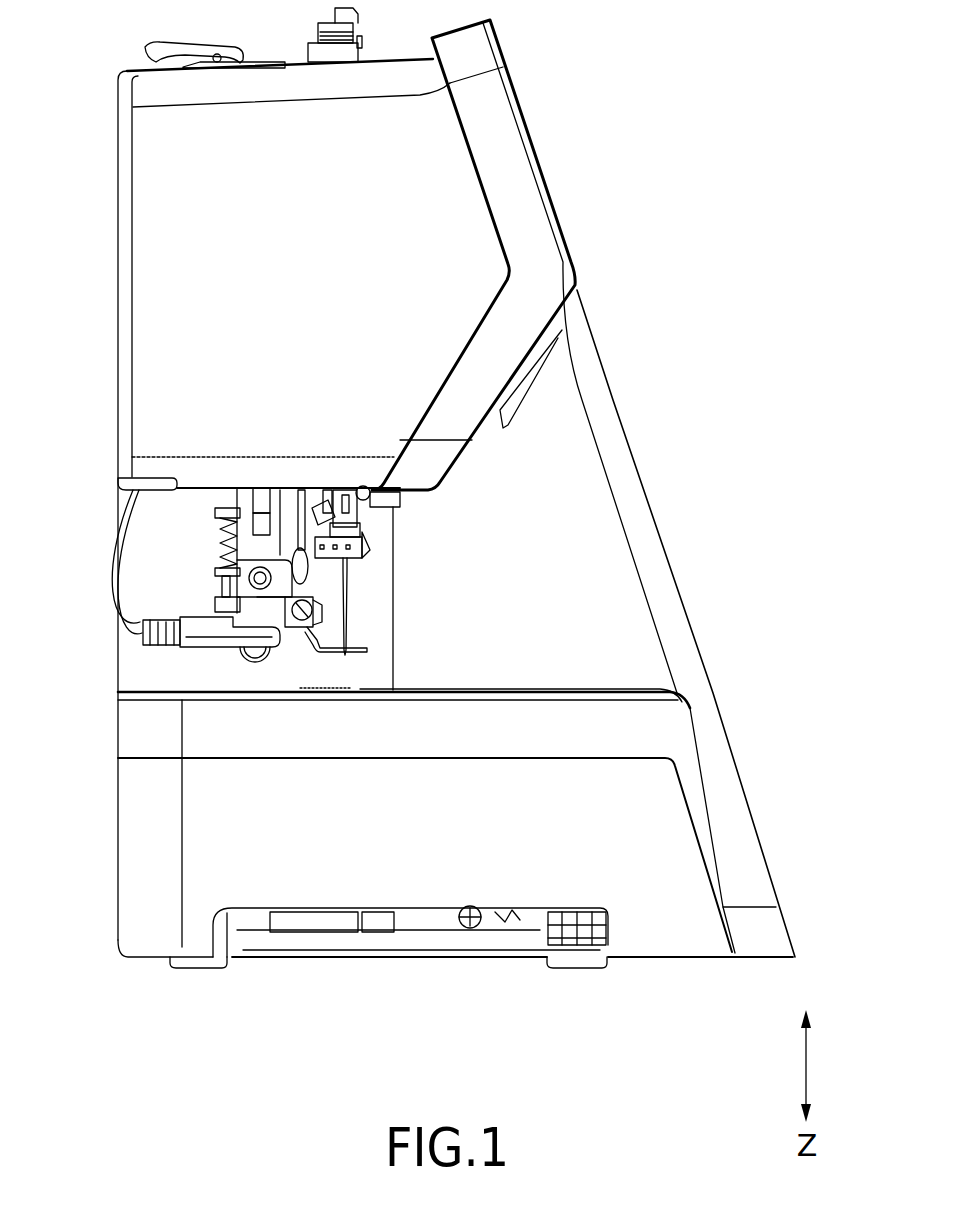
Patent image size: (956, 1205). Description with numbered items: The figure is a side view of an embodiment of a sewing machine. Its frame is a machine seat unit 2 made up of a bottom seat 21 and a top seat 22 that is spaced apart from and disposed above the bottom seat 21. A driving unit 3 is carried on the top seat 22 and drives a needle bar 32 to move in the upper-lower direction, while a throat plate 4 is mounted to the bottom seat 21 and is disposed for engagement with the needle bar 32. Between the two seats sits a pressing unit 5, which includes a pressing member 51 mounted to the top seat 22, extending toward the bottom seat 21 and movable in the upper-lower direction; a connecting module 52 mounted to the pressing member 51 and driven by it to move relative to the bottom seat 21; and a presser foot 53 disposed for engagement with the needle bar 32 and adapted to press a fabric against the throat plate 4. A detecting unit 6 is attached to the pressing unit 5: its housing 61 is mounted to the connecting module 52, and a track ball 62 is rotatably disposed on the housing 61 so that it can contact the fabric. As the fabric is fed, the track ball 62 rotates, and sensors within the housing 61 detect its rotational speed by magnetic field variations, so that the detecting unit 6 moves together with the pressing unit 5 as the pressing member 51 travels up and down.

The machine seat unit 2 is at (102, 158).
The top seat 22 is at (150, 130).
The bottom seat 21 is at (637, 848).
The driving unit 3 is at (378, 529).
The needle bar 32 is at (347, 603).
The pressing unit 5 is at (378, 639).
The pressing member 51 is at (293, 502).
The connecting module 52 is at (223, 518).
The presser foot 53 is at (362, 664).
The throat plate 4 is at (362, 686).
The detecting unit 6 is at (225, 652).
The housing 61 is at (210, 627).
The track ball 62 is at (262, 657).